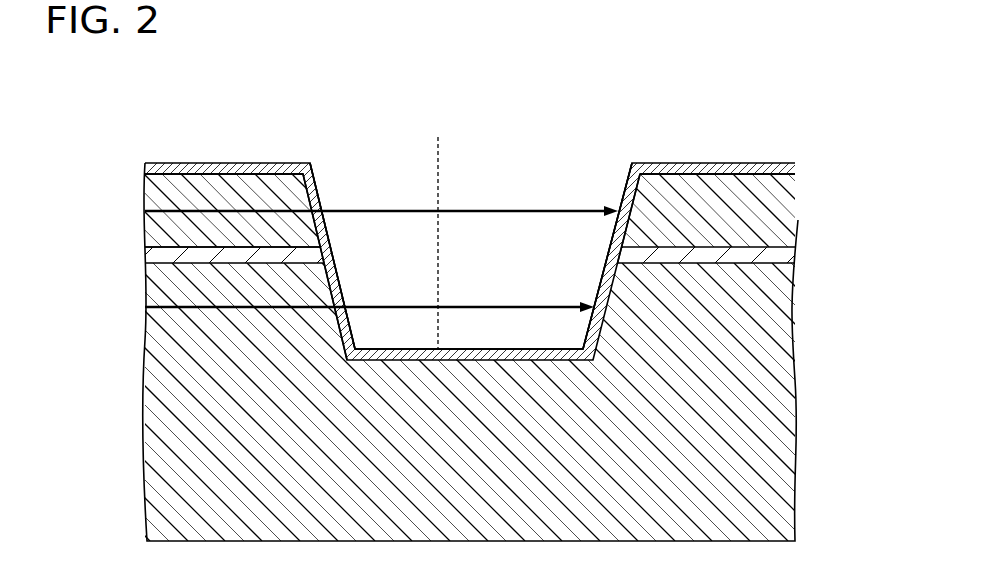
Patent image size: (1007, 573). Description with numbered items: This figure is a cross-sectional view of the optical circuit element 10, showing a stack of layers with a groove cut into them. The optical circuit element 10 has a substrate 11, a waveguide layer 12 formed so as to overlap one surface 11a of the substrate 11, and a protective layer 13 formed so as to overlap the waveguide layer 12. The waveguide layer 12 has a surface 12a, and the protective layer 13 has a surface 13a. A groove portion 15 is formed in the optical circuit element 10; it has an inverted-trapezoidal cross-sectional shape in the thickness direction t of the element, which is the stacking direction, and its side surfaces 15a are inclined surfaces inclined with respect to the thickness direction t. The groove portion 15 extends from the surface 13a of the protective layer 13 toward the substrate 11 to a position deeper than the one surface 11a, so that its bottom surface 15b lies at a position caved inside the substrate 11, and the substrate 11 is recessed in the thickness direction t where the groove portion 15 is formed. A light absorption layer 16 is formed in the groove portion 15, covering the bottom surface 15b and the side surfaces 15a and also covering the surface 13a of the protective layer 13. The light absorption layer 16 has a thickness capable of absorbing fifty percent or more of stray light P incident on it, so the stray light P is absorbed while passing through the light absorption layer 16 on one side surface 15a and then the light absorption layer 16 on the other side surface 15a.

The optical circuit element 10 is at (650, 128).
The substrate 11 is at (775, 394).
The one surface of the substrate 11a is at (322, 258).
The waveguide layer 12 is at (778, 255).
The surface of the waveguide layer 12a is at (178, 246).
The protective layer 13 is at (775, 204).
The surface of the protective layer 13a is at (250, 172).
The groove portion 15 is at (488, 161).
The side surface of the groove portion 15a is at (322, 228).
The bottom surface of the groove portion 15b is at (478, 356).
The light absorption layer 16 is at (176, 168).
The stray light P is at (538, 206).
The thickness direction t is at (436, 230).